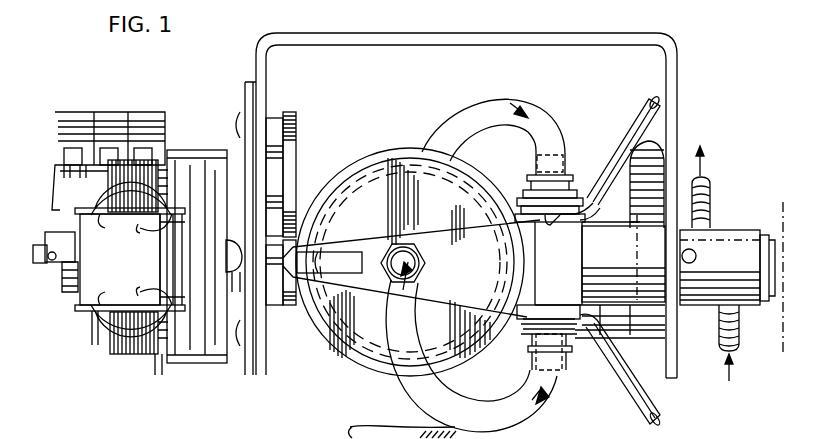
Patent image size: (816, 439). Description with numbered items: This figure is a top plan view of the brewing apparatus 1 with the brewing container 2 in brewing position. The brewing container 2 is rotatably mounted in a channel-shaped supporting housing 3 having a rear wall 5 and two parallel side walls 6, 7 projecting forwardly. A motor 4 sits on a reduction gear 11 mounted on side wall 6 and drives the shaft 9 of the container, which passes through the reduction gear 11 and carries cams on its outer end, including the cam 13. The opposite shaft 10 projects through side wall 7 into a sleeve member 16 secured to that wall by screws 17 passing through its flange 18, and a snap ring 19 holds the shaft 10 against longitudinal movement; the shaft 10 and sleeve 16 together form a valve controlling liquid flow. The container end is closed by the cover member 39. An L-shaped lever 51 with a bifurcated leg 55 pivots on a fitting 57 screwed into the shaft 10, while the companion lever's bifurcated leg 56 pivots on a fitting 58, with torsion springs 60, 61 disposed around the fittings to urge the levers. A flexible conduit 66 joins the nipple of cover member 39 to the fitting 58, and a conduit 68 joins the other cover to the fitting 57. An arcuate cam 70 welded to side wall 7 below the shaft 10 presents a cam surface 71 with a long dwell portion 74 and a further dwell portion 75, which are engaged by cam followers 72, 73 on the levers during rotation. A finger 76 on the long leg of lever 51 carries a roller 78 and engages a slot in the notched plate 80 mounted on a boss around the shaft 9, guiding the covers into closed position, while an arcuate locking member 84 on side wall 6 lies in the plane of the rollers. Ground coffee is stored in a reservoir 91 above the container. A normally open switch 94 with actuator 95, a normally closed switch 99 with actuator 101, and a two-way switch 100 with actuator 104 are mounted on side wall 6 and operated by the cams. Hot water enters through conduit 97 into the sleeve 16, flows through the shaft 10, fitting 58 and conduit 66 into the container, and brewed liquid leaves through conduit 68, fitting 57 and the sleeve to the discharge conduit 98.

The brewing apparatus 1 is at (690, 43).
The brewing container 2 is at (382, 144).
The supporting housing 3 is at (684, 103).
The motor 4 is at (72, 309).
The rear wall 5 is at (512, 34).
The side wall 6 is at (260, 72).
The side wall 7 is at (672, 78).
The shaft 9 is at (38, 252).
The shaft 10 is at (618, 255).
The reduction gear 11 is at (210, 364).
The cam 13 is at (783, 202).
The sleeve member 16 is at (748, 308).
The screws 17 is at (697, 258).
The flange 18 is at (677, 335).
The snap ring 19 is at (762, 230).
The cover member 39 is at (402, 185).
The lever 51 is at (478, 205).
The bifurcated leg 55 is at (585, 221).
The bifurcated leg 56 is at (598, 208).
The fitting 57 is at (572, 153).
The fitting 58 is at (540, 372).
The torsion spring 60 is at (527, 210).
The torsion spring 61 is at (524, 328).
The conduit 66 is at (446, 392).
The conduit 68 is at (520, 107).
The cam 70 is at (664, 158).
The cam surface 71 is at (592, 203).
The cam follower 72 is at (620, 400).
The cam follower 73 is at (640, 114).
The dwell portion 74 is at (637, 250).
The dwell portion 75 is at (604, 310).
The finger 76 is at (340, 252).
The roller 78 is at (338, 302).
The plate 80 is at (270, 305).
The locking member 84 is at (296, 116).
The reservoir 91 is at (350, 428).
The switch 94 is at (110, 114).
The actuator 95 is at (116, 150).
The conduit 97 is at (734, 351).
The conduit 98 is at (712, 186).
The switch 99 is at (150, 114).
The switch 100 is at (80, 116).
The actuator 101 is at (146, 156).
The actuator 104 is at (68, 156).